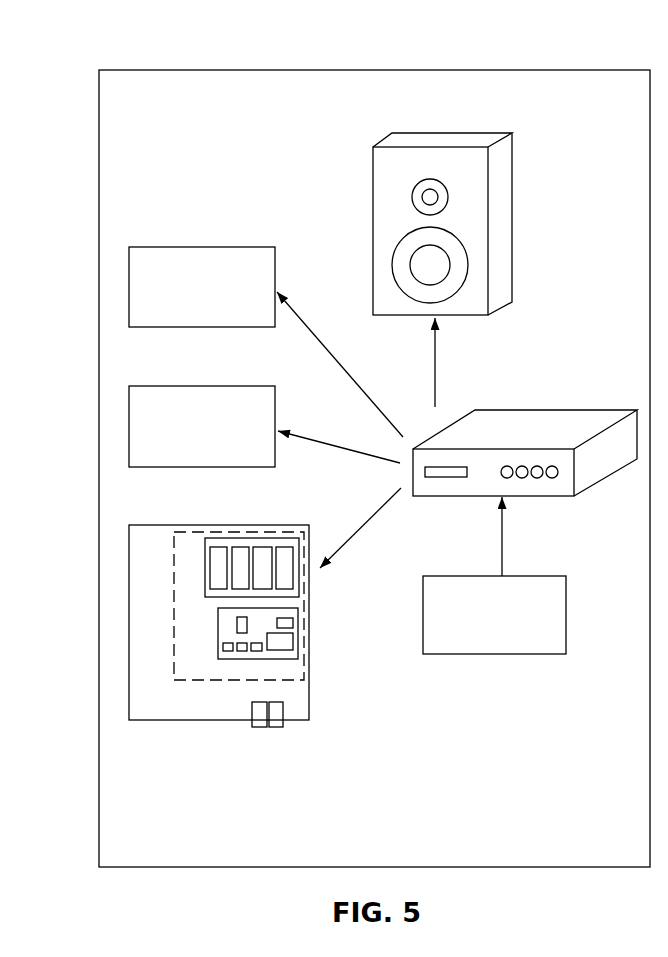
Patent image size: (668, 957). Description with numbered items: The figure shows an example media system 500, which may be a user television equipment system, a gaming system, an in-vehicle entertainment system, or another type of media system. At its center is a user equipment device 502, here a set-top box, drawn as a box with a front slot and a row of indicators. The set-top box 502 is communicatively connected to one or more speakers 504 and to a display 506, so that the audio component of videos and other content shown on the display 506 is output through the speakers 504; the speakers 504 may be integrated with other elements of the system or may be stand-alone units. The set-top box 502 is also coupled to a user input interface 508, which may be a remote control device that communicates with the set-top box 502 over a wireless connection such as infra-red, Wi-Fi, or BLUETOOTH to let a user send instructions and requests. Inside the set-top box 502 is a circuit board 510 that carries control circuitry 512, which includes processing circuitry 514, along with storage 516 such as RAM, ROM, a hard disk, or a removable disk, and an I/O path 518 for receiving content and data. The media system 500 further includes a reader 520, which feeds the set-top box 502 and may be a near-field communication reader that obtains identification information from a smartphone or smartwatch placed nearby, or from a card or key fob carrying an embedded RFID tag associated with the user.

The media system 500 is at (548, 44).
The user equipment device 502 is at (550, 409).
The speakers 504 is at (372, 186).
The display 506 is at (128, 428).
The user input interface 508 is at (128, 288).
The circuit board 510 is at (309, 705).
The control circuitry 512 is at (174, 627).
The processing circuitry 514 is at (216, 643).
The storage 516 is at (224, 534).
The I/O path 518 is at (259, 730).
The reader 520 is at (490, 575).